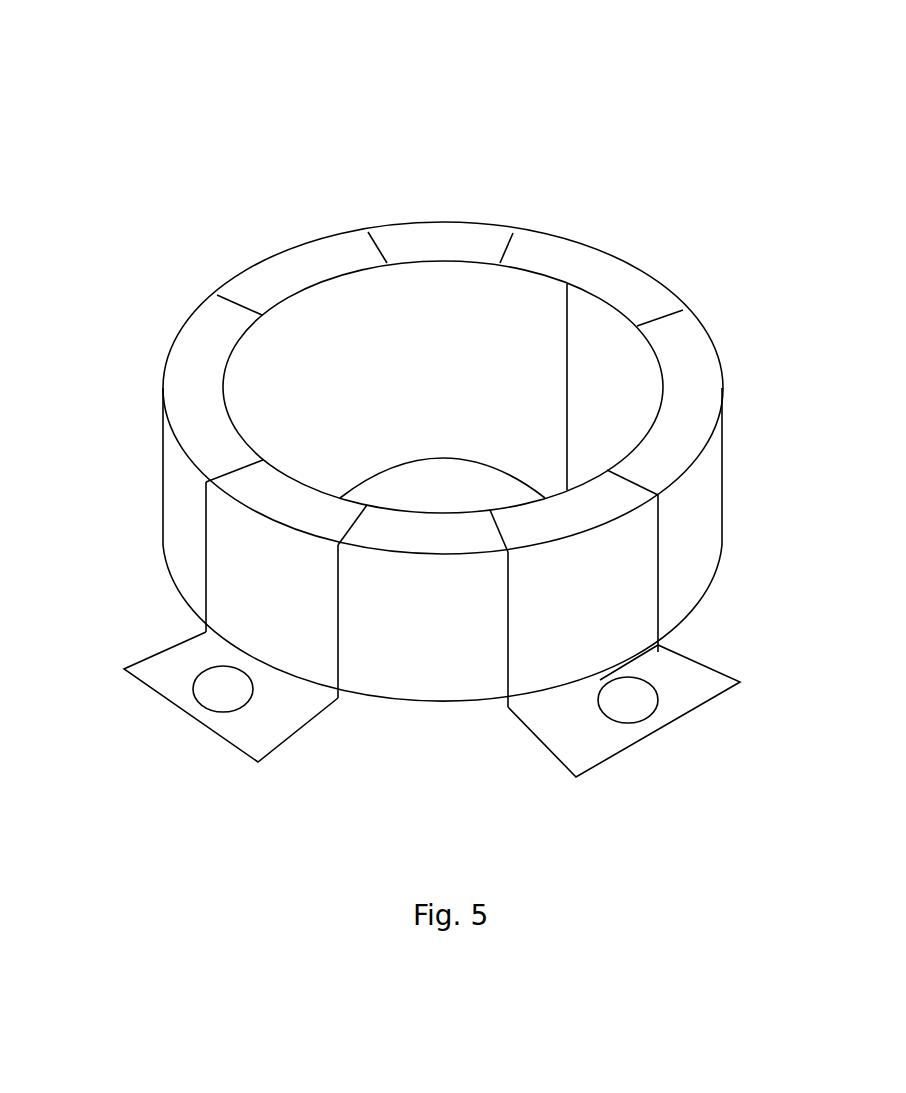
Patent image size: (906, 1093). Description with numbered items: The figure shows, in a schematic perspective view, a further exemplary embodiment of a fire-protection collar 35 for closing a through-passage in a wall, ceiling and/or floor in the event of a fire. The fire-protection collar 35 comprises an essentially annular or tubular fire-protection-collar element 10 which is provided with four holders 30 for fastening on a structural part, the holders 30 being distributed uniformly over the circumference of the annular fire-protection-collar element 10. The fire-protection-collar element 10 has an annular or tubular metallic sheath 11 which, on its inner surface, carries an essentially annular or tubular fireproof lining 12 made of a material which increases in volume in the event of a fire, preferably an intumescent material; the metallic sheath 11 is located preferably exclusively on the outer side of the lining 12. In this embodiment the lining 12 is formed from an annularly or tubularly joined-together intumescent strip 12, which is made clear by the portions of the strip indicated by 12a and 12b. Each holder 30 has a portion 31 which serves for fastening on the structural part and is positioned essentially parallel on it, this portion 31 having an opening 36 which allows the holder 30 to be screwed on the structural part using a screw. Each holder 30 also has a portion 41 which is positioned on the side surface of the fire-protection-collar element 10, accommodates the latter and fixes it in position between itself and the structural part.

The fire-protection-collar element 10 is at (378, 741).
The metallic sheath 11 is at (176, 493).
The lining 12 is at (447, 237).
The portion of the intumescent strip 12a is at (453, 341).
The portion of the intumescent strip 12b is at (637, 377).
The holder 30 is at (337, 253).
The portion 31 is at (258, 742).
The fire-protection collar 35 is at (645, 140).
The opening 36 is at (196, 697).
The portion 41 is at (358, 253).